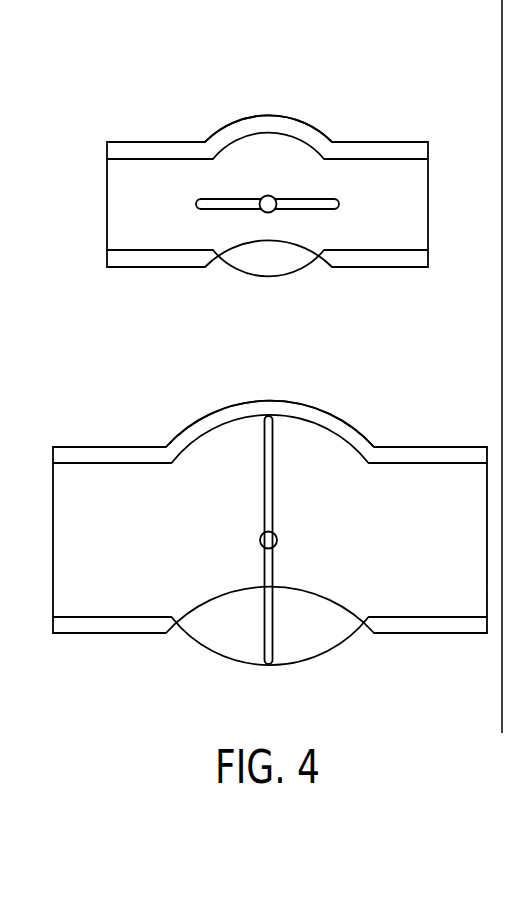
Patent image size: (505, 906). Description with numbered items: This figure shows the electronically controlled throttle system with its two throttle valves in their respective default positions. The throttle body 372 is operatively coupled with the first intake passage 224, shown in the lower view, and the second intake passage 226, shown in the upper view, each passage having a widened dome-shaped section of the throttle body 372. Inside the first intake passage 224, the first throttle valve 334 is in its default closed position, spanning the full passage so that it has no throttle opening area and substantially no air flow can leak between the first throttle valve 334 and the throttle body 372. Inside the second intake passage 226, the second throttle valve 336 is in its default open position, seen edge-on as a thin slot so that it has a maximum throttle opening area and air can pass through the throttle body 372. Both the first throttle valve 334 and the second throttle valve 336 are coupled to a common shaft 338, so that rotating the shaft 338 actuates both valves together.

The first intake passage 224 is at (392, 447).
The second intake passage 226 is at (392, 142).
The first throttle valve 334 is at (273, 497).
The second throttle valve 336 is at (322, 202).
The shaft 338 is at (262, 197).
The throttle body 372 is at (269, 117).